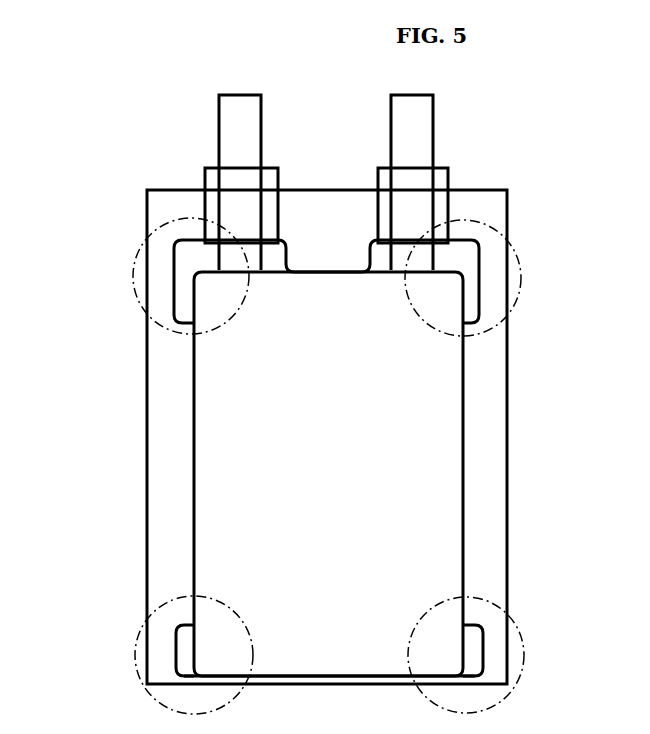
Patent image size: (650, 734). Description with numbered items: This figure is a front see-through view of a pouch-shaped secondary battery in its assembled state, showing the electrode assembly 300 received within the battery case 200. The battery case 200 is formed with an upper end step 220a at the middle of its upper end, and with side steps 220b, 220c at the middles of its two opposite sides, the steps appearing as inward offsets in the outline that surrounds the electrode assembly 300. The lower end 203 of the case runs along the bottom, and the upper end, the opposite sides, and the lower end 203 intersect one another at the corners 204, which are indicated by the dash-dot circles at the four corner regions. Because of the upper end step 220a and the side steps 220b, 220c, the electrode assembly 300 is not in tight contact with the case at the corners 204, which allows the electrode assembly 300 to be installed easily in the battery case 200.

The battery case 200 is at (147, 372).
The lower end 203 is at (343, 676).
The corners 204 is at (138, 258).
The upper end step 220a is at (325, 253).
The side step 220b is at (476, 460).
The side step 220c is at (178, 462).
The electrode assembly 300 is at (352, 472).